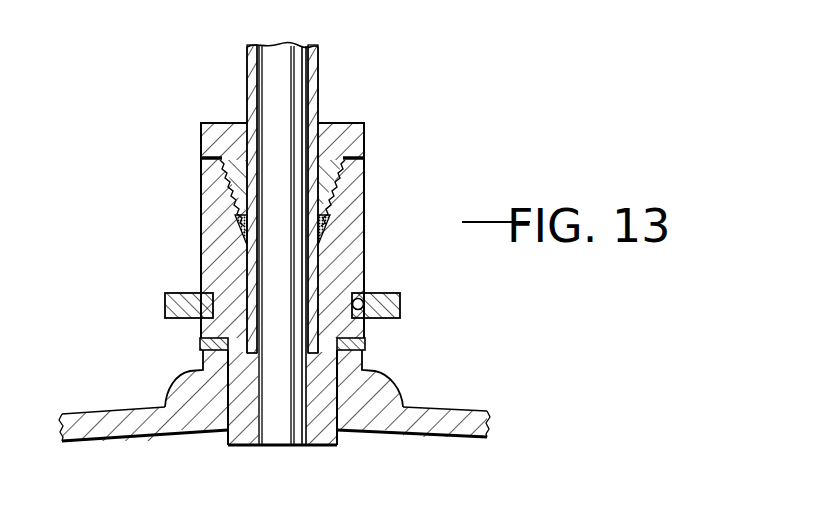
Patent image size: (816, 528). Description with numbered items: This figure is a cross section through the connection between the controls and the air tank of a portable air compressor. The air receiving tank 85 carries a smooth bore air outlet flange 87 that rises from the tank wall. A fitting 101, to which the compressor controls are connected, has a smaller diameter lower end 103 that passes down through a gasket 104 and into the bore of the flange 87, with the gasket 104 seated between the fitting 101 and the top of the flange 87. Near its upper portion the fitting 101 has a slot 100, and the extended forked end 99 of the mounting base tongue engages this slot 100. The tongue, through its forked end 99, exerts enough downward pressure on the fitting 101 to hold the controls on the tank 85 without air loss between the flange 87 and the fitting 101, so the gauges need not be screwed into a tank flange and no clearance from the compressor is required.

The air receiving tank 85 is at (466, 424).
The smooth bore air outlet flange 87 is at (402, 382).
The extended forked end 99 is at (165, 293).
The slot 100 is at (366, 298).
The fitting 101 is at (366, 185).
The smaller diameter lower end 103 is at (340, 440).
The gasket 104 is at (366, 345).